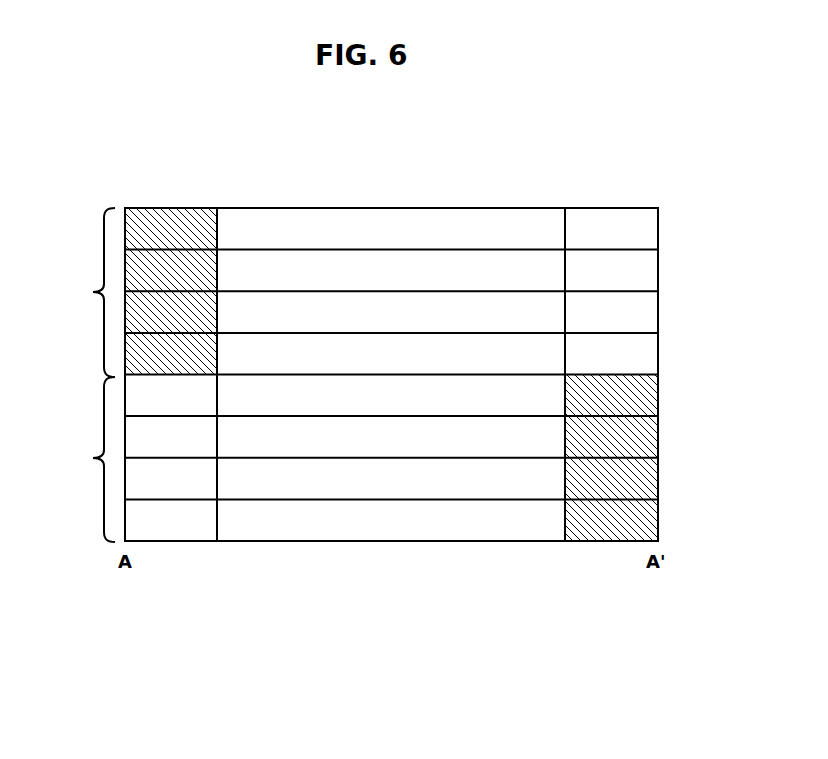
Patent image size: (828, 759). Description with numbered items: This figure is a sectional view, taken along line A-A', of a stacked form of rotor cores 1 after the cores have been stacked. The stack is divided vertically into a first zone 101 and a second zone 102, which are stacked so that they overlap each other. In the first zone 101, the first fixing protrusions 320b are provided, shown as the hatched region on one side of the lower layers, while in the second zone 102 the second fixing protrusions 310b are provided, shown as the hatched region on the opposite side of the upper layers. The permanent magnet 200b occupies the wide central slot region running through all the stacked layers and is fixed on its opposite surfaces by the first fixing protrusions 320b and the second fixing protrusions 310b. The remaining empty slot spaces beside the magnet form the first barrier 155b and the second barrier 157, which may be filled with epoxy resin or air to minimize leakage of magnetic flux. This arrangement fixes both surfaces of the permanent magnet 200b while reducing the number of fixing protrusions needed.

The display device 1 is at (527, 151).
The second fixing protrusion 310b is at (177, 215).
The first fixing protrusion 320b is at (608, 522).
The permanent magnet 200b is at (383, 227).
The second barrier 157 is at (612, 225).
The first barrier 155b is at (174, 525).
The second zone 102 is at (81, 292).
The first zone 101 is at (81, 459).